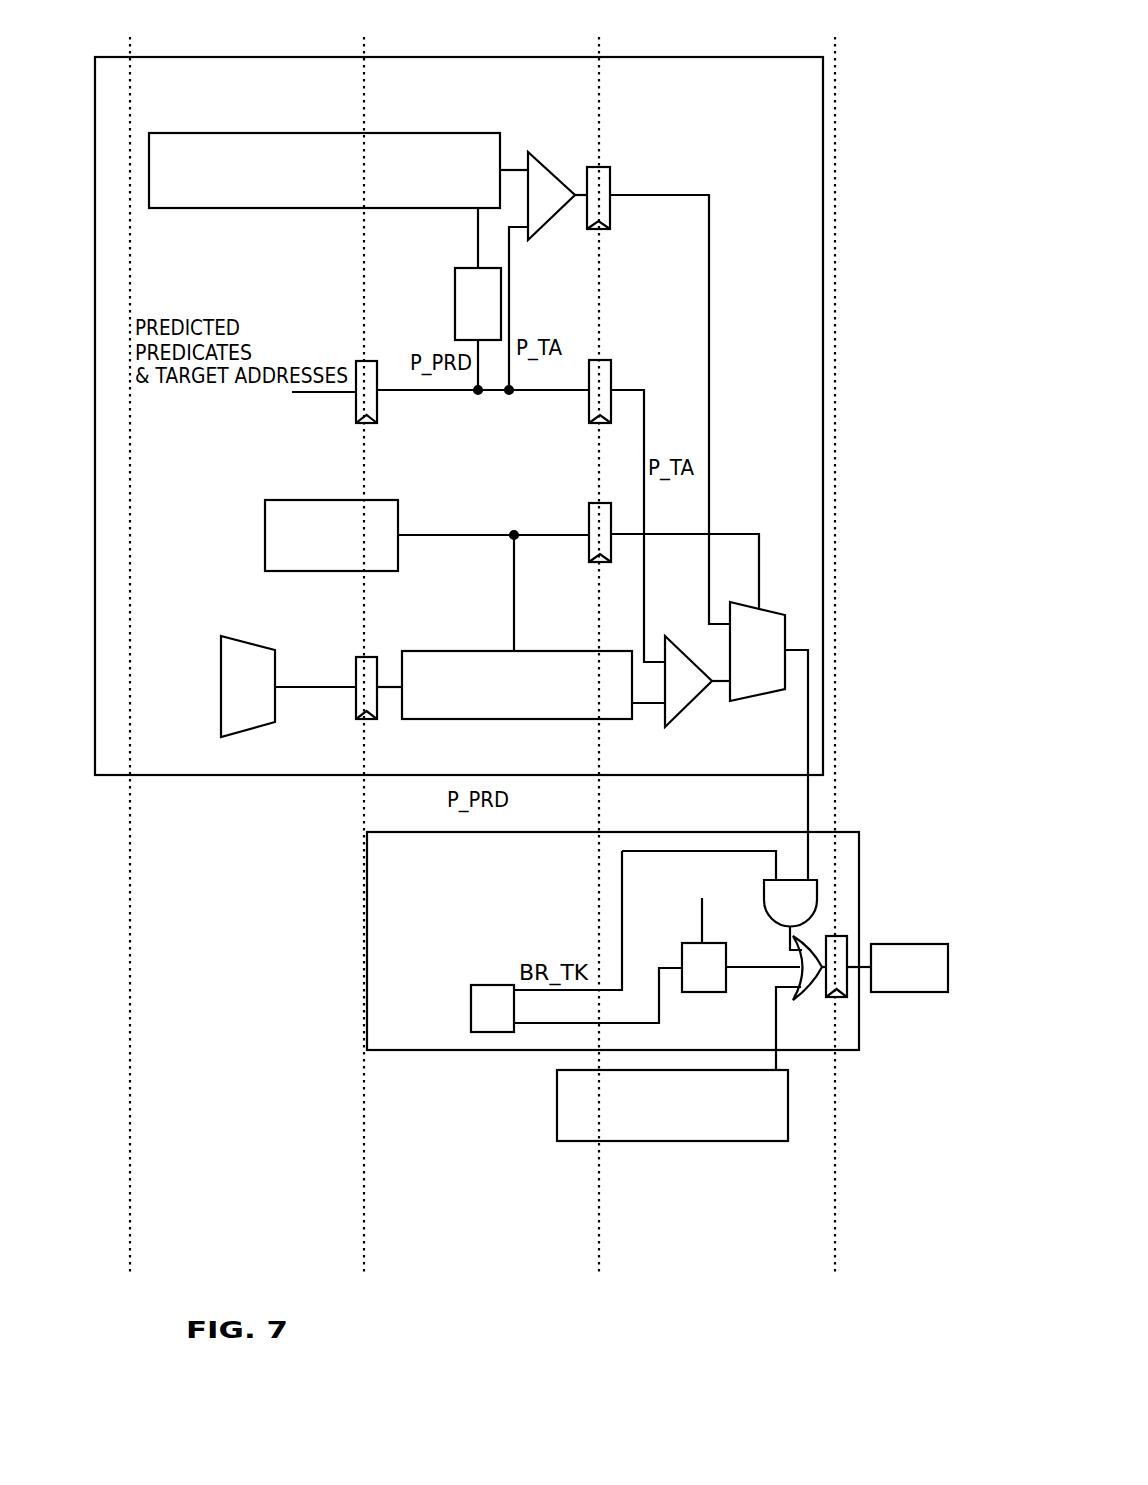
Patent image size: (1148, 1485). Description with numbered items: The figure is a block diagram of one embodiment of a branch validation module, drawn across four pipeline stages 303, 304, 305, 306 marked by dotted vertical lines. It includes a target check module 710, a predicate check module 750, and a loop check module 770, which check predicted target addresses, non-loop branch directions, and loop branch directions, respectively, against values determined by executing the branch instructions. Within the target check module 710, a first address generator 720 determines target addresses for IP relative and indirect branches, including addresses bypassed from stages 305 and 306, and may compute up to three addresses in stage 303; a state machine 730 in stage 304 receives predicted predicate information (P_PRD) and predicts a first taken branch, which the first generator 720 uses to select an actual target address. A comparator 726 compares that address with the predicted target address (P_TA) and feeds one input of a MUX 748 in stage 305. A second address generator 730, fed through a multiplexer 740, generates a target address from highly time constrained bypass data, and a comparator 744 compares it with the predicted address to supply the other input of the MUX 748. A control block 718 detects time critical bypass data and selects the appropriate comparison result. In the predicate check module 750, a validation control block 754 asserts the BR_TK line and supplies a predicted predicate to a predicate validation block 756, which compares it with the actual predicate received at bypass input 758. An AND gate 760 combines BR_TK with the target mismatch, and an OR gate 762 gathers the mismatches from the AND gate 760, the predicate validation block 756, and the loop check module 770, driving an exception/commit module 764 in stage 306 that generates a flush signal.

The stage 303 is at (199, 639).
The stage 304 is at (438, 639).
The stage 305 is at (671, 639).
The stage 306 is at (894, 639).
The target check module 710 is at (828, 295).
The control block 718 is at (331, 535).
The first address generator 720 is at (324, 170).
The comparator 726 is at (551, 196).
The second address generator 730 is at (517, 493).
The multiplexer 740 is at (248, 686).
The comparator 744 is at (688, 681).
The MUX 748 is at (757, 651).
The predicate check module 750 is at (866, 921).
The validation control block 754 is at (495, 1008).
The predicate validation block 756 is at (706, 967).
The input 758 is at (705, 906).
The AND gate 760 is at (791, 903).
The OR gate 762 is at (799, 995).
The exception/commit module 764 is at (909, 968).
The loop check module 770 is at (672, 1105).